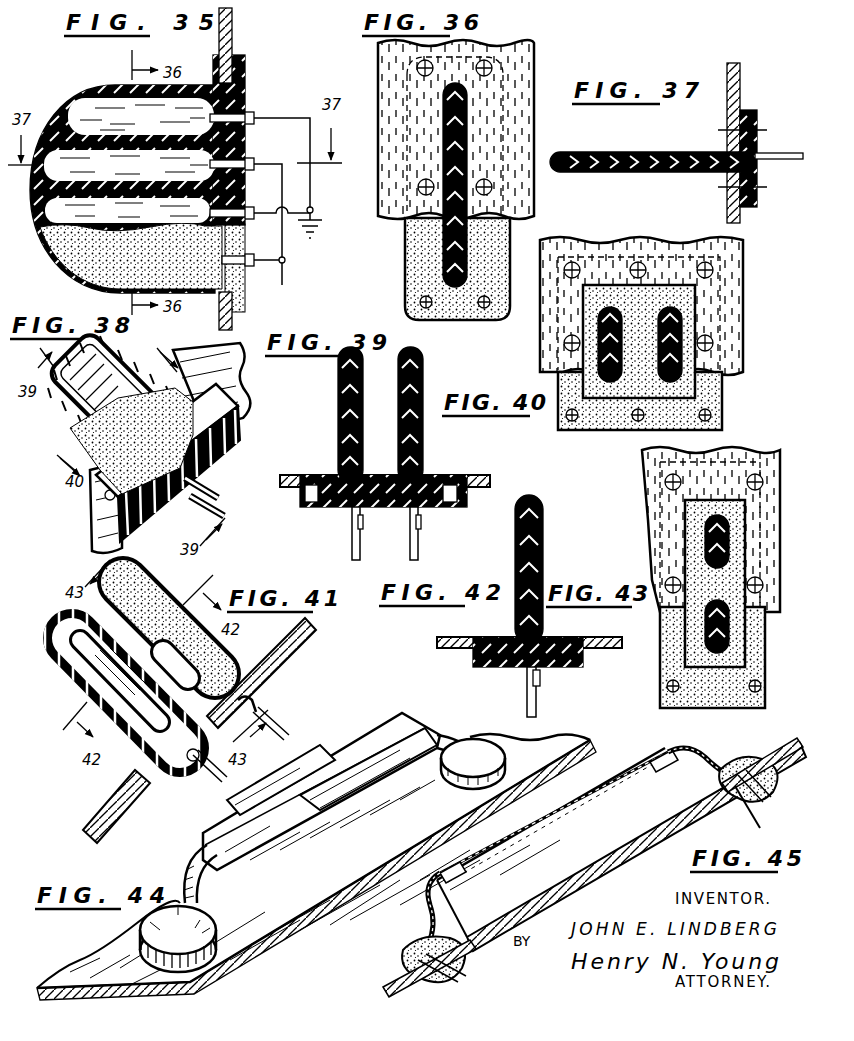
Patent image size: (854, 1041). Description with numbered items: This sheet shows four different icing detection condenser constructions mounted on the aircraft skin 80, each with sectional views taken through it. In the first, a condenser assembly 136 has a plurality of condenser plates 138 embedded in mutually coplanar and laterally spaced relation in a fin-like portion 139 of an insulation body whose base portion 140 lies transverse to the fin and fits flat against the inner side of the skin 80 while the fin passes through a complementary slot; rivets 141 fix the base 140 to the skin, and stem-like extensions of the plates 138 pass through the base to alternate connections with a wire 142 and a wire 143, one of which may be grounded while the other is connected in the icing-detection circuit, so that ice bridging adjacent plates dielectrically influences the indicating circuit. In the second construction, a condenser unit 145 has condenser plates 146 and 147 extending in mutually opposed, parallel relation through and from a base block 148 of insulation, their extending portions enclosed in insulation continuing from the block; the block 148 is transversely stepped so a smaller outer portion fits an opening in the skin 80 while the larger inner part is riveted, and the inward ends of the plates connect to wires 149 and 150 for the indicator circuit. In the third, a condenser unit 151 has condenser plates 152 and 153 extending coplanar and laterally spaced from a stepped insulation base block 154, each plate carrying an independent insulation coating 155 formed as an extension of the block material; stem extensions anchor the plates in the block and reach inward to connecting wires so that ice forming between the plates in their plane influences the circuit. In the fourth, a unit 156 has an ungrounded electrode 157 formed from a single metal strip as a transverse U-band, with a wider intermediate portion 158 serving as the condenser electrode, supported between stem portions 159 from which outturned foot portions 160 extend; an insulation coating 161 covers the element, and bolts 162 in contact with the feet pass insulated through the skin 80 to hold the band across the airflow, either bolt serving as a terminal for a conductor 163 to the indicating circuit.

In FIG. 35, the skin 80 is at (232, 34).
In FIG. 36, the skin 80 is at (380, 76).
In FIG. 37, the skin 80 is at (741, 90).
In FIG. 40, the skin 80 is at (744, 272).
In FIG. 38, the skin 80 is at (248, 380).
In FIG. 39, the skin 80 is at (470, 477).
In FIG. 42, the skin 80 is at (562, 638).
In FIG. 43, the skin 80 is at (647, 497).
In FIG. 44, the skin 80 is at (112, 944).
In FIG. 45, the skin 80 is at (628, 830).
In FIG. 35, the condenser assembly 136 is at (92, 94).
In FIG. 35, the condenser plates 138 is at (145, 181).
In FIG. 36, the condenser plates 138 is at (470, 121).
In FIG. 37, the condenser plates 138 is at (655, 152).
In FIG. 35, the fin-like portion 139 is at (68, 273).
In FIG. 36, the fin-like portion 139 is at (443, 170).
In FIG. 37, the fin-like portion 139 is at (594, 151).
In FIG. 35, the base portion 140 is at (246, 82).
In FIG. 36, the base portion 140 is at (406, 241).
In FIG. 37, the base portion 140 is at (748, 208).
In FIG. 36, the rivets 141 is at (493, 63).
In FIG. 35, the wire 142 is at (314, 223).
In FIG. 37, the wire 142 is at (782, 150).
In FIG. 35, the wire 143 is at (284, 272).
In FIG. 40, the condenser unit 145 is at (700, 322).
In FIG. 38, the condenser unit 145 is at (62, 430).
In FIG. 40, the condenser plate 146 is at (720, 388).
In FIG. 38, the condenser plate 146 is at (60, 412).
In FIG. 39, the condenser plate 146 is at (424, 437).
In FIG. 40, the condenser plate 147 is at (606, 382).
In FIG. 38, the condenser plate 147 is at (108, 346).
In FIG. 39, the condenser plate 147 is at (340, 446).
In FIG. 40, the base block 148 is at (660, 392).
In FIG. 38, the base block 148 is at (216, 456).
In FIG. 39, the base block 148 is at (328, 509).
In FIG. 38, the wire 149 is at (226, 518).
In FIG. 39, the wire 149 is at (418, 550).
In FIG. 38, the wire 150 is at (222, 497).
In FIG. 39, the wire 150 is at (360, 550).
In FIG. 41, the condenser unit 151 is at (76, 698).
In FIG. 43, the condenser unit 151 is at (690, 536).
In FIG. 41, the condenser plate 152 is at (65, 645).
In FIG. 43, the condenser plate 152 is at (710, 640).
In FIG. 41, the condenser plate 153 is at (126, 570).
In FIG. 42, the condenser plate 153 is at (545, 550).
In FIG. 43, the condenser plate 153 is at (710, 547).
In FIG. 41, the base block 154 is at (220, 778).
In FIG. 42, the base block 154 is at (565, 668).
In FIG. 43, the base block 154 is at (690, 624).
In FIG. 41, the insulation coatings 155 is at (146, 580).
In FIG. 42, the insulation coatings 155 is at (544, 527).
In FIG. 44, the unit 156 is at (365, 728).
In FIG. 44, the electrode 157 is at (298, 762).
In FIG. 45, the electrode 157 is at (428, 900).
In FIG. 44, the intermediate portion 158 is at (302, 790).
In FIG. 45, the intermediate portion 158 is at (536, 816).
In FIG. 45, the stem portions 159 is at (427, 920).
In FIG. 45, the foot portions 160 is at (402, 952).
In FIG. 44, the insulation coating 161 is at (405, 718).
In FIG. 45, the insulation coating 161 is at (676, 755).
In FIG. 45, the bolts 162 is at (462, 980).
In FIG. 45, the conductor 163 is at (762, 818).